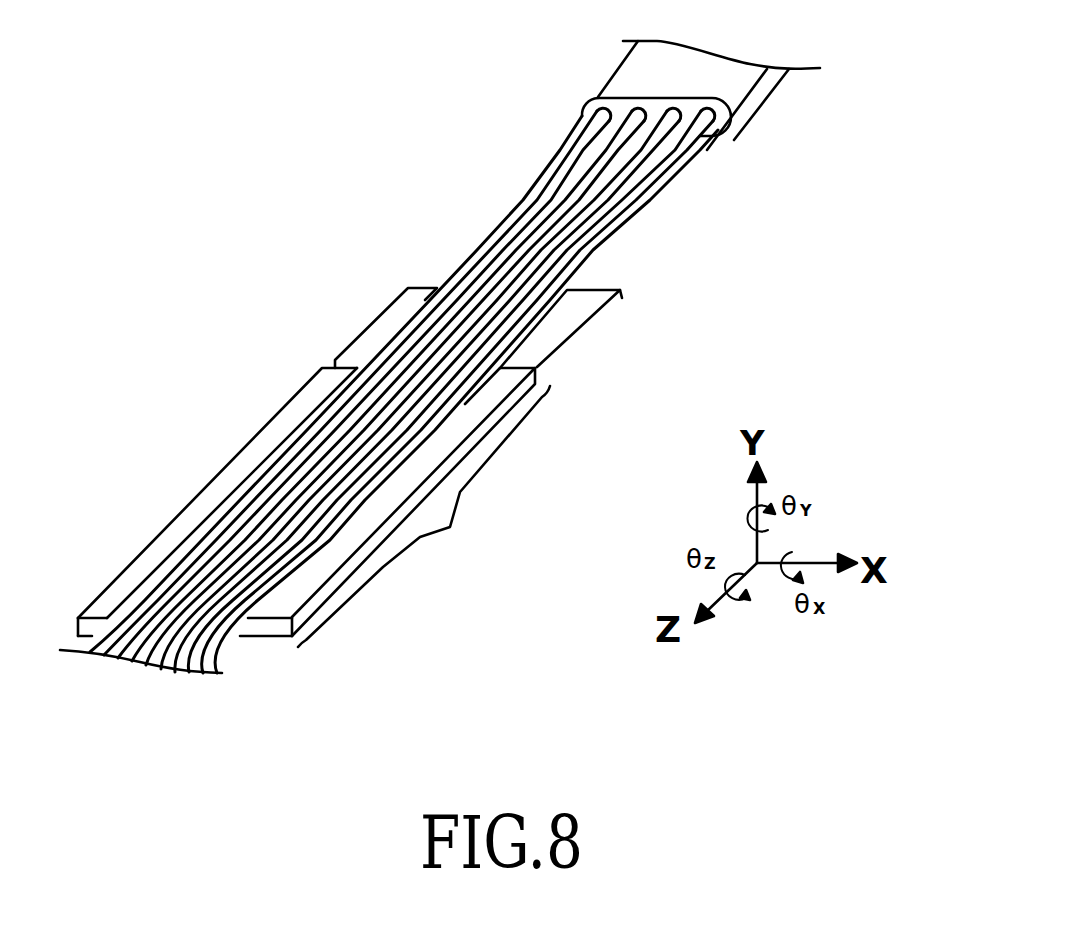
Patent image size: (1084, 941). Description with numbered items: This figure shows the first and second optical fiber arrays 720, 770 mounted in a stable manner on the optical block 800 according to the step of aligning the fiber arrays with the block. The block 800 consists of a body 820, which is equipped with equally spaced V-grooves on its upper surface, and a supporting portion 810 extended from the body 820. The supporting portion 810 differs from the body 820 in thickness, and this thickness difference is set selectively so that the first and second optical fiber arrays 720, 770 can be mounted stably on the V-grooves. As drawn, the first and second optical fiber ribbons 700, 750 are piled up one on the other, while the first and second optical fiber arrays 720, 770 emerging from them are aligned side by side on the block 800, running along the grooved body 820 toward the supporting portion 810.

The first optical fiber ribbon 700 is at (767, 90).
The second optical fiber ribbon 750 is at (600, 80).
The second optical fiber array 770 is at (540, 165).
The first optical fiber array 720 is at (688, 186).
The optical block 800 is at (248, 418).
The supporting portion 810 is at (622, 298).
The body 820 is at (450, 527).